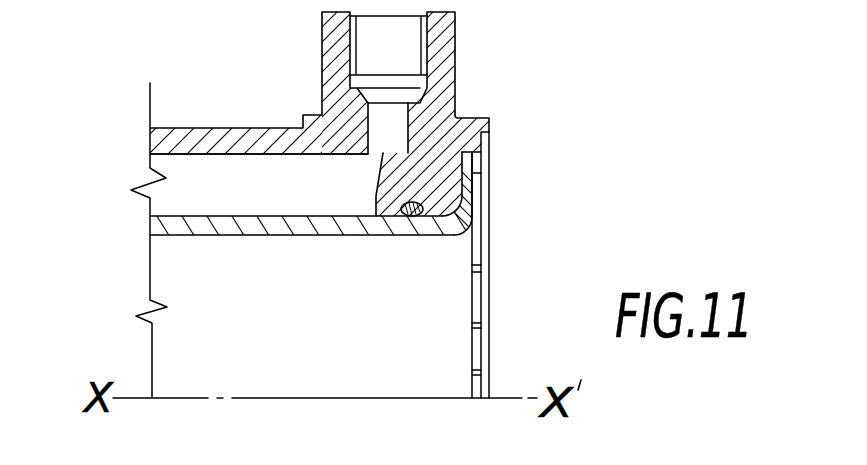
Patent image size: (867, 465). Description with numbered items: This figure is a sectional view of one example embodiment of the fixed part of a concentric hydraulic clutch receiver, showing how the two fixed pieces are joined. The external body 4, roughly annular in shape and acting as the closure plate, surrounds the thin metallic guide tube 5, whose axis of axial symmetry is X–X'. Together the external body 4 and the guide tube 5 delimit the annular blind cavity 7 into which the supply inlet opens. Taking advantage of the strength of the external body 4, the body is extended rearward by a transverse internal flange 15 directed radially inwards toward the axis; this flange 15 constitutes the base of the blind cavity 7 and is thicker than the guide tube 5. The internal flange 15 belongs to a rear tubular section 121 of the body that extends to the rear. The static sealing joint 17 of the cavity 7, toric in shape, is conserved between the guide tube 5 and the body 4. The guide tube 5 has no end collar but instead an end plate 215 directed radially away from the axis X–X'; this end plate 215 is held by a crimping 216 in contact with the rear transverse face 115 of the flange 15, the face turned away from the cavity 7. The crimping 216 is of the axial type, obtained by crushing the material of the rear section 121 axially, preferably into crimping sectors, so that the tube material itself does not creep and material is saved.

The external body 4 is at (150, 139).
The guide tube 5 is at (218, 235).
The cavity 7 is at (258, 200).
The internal flange 15 is at (376, 205).
The static sealing joint 17 is at (412, 216).
The rear transverse face 115 is at (463, 184).
The rear tubular section 121 is at (476, 118).
The end plate 215 is at (468, 213).
The crimping 216 is at (490, 148).